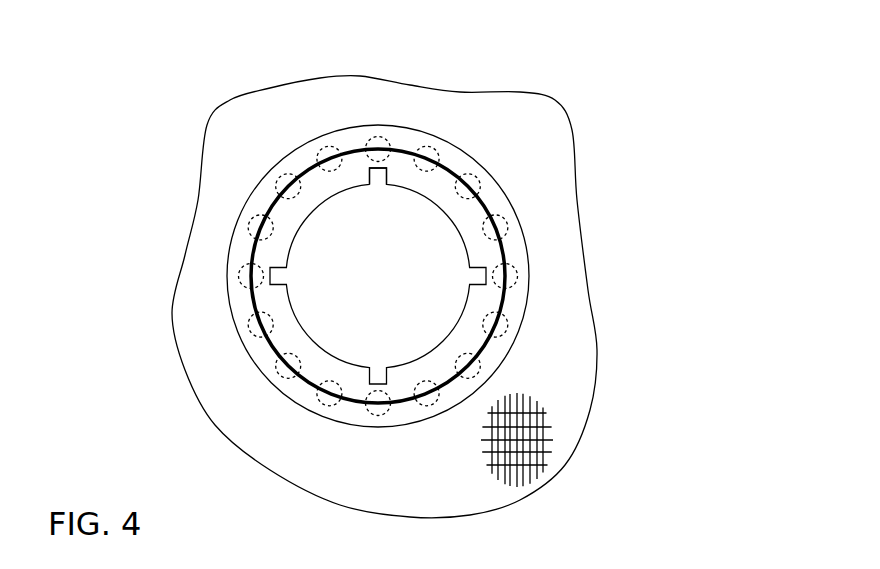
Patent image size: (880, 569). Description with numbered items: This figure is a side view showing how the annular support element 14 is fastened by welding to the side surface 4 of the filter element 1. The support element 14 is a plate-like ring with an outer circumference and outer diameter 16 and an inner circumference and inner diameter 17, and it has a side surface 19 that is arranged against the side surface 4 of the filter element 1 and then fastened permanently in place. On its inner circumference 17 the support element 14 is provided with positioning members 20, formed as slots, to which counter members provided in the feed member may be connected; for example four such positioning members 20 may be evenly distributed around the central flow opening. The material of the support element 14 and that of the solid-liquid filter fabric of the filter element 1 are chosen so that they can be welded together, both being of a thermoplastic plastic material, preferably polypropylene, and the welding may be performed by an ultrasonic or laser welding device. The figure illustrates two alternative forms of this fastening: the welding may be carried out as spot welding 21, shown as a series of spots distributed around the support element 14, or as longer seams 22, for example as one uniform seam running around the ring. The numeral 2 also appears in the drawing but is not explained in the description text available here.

The filter element 1 is at (154, 72).
The housing 2 is at (177, 194).
The side surface 4 is at (552, 165).
The support element 14 is at (205, 335).
The outer diameter 16 is at (530, 305).
The inner diameter 17 is at (450, 340).
The side surface 19 is at (513, 247).
The positioning member 20 is at (378, 180).
The spot welding 21 is at (425, 152).
The seam 22 is at (490, 342).